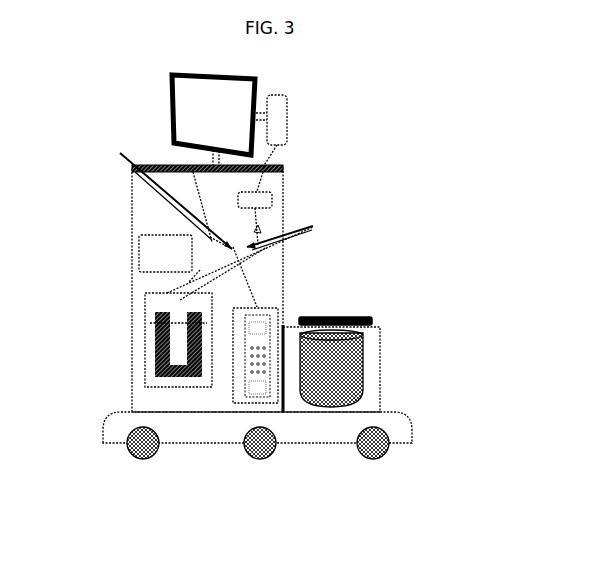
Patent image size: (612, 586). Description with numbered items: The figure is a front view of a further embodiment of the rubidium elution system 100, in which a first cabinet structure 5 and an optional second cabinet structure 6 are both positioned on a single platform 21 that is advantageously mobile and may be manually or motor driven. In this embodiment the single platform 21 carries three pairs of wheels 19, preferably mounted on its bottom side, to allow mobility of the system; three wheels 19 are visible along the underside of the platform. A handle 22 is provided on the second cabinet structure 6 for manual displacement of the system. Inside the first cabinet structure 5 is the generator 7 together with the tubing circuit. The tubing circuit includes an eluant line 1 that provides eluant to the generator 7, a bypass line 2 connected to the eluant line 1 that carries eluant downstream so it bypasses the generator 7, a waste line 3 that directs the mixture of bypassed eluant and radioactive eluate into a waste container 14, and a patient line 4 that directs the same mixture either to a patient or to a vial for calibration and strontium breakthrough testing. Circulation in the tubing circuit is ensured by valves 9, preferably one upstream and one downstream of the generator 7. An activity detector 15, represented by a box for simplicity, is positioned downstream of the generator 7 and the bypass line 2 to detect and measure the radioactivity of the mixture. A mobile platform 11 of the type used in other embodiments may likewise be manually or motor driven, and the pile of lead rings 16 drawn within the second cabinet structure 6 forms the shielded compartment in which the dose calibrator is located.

The rubidium elution system 100 is at (397, 194).
The first cabinet structure 5 is at (138, 217).
The activity detector 15 is at (152, 253).
The first mobile platform 11 is at (143, 284).
The generator 7 is at (178, 355).
The waste line 3 is at (255, 325).
The waste container 14 is at (262, 320).
The patient line 4 is at (198, 207).
The valve 9 is at (217, 195).
The bypass line 2 is at (240, 260).
The eluant line 1 is at (223, 268).
The second cabinet structure 6 is at (380, 355).
The handle 22 is at (352, 319).
The container 16 is at (335, 392).
The single platform 21 is at (398, 428).
The wheels 19 is at (143, 450).